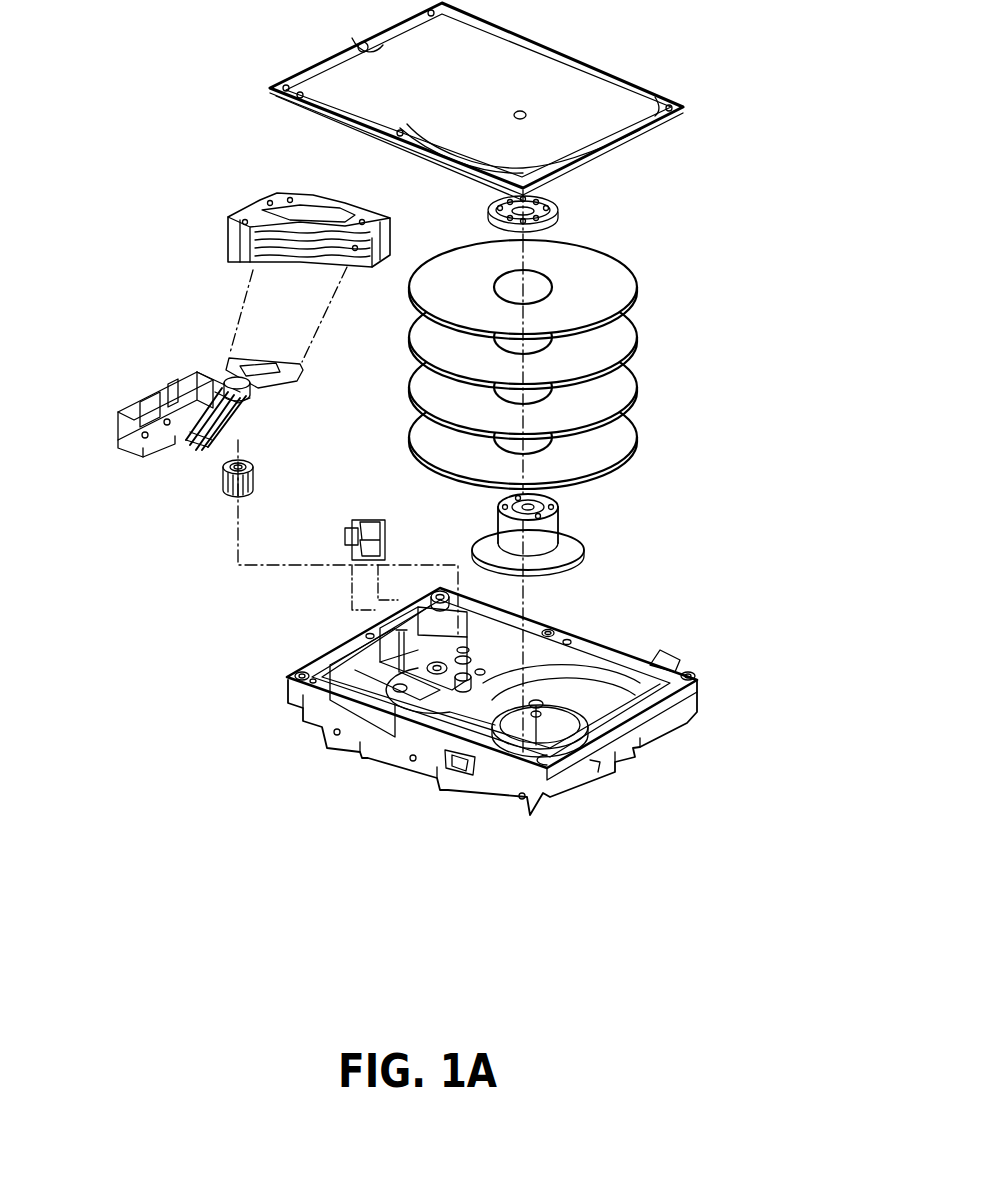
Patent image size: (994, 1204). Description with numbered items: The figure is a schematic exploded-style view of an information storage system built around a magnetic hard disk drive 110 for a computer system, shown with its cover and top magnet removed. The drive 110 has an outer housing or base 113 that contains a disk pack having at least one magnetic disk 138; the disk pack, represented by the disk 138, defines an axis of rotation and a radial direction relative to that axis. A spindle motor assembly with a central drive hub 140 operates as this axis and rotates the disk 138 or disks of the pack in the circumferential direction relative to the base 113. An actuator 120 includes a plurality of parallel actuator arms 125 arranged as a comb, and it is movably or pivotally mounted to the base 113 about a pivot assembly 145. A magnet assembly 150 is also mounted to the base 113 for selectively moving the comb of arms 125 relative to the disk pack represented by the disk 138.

The hard disk drive 110 is at (688, 800).
The base 113 is at (303, 697).
The actuator 120 is at (108, 353).
The actuator arms 125 is at (220, 432).
The magnetic disk 138 is at (676, 223).
The central drive hub 140 is at (560, 510).
The pivot assembly 145 is at (253, 418).
The magnet assembly 150 is at (228, 200).